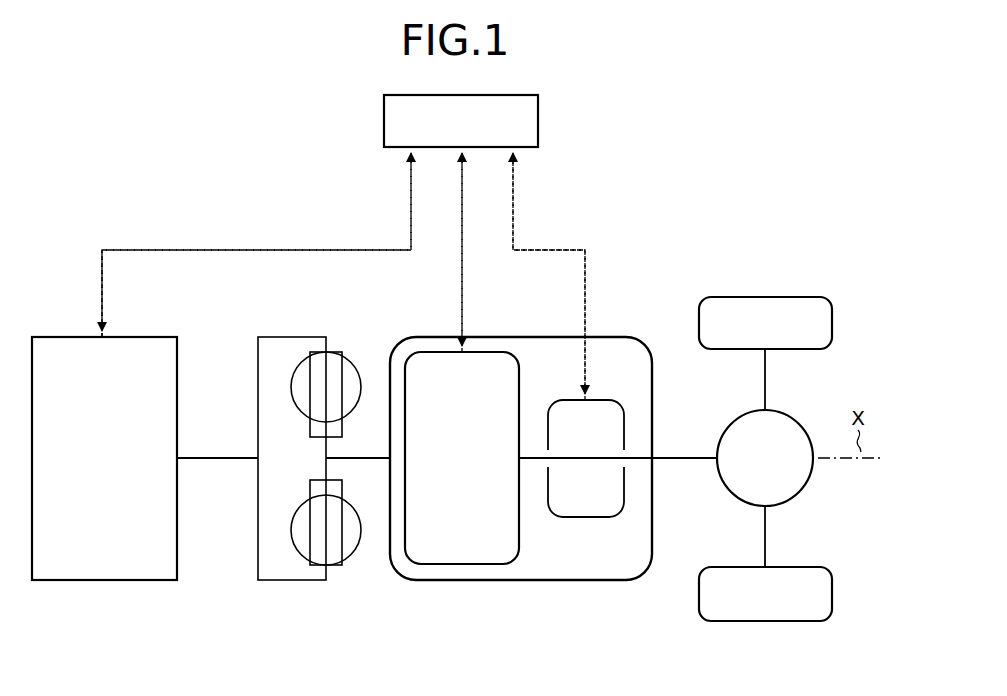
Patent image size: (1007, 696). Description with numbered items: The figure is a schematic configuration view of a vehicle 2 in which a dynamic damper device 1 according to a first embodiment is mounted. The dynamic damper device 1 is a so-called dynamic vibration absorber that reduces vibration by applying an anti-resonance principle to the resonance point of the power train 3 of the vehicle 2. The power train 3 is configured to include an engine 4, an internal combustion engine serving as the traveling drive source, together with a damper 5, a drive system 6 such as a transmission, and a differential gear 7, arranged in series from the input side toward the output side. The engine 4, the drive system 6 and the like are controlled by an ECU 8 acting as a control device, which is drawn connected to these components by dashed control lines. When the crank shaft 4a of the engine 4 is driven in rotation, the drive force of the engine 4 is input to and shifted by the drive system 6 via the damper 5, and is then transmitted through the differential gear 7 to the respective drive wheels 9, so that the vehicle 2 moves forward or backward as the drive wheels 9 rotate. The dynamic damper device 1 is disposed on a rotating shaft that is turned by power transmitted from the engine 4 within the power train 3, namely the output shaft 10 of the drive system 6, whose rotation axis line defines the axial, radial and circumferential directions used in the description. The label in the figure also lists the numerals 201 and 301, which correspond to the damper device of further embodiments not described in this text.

The dynamic damper device 1 is at (585, 481).
The motor (second embodiment) 201 is at (585, 481).
The motor (third embodiment) 301 is at (586, 517).
The vehicle 2 is at (608, 215).
The power train 3 is at (230, 305).
The engine 4 is at (144, 322).
The crank shaft 4a is at (220, 458).
The damper 5 is at (302, 320).
The drive system 6 is at (485, 338).
The differential gear 7 is at (789, 405).
The ECU 8 is at (538, 121).
The drive wheels 9 is at (766, 297).
The output shaft 10 is at (532, 457).